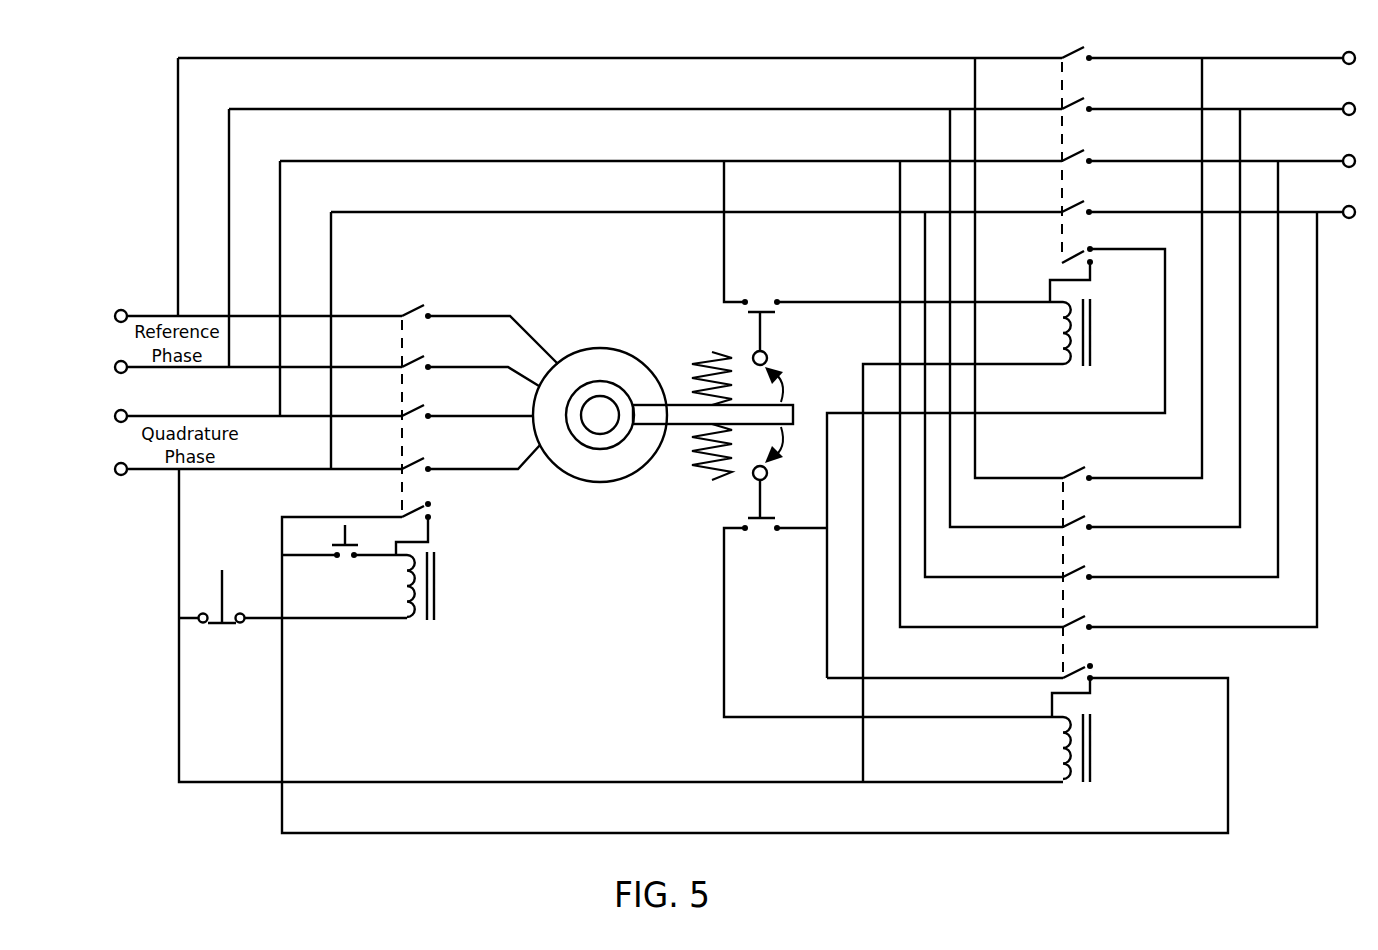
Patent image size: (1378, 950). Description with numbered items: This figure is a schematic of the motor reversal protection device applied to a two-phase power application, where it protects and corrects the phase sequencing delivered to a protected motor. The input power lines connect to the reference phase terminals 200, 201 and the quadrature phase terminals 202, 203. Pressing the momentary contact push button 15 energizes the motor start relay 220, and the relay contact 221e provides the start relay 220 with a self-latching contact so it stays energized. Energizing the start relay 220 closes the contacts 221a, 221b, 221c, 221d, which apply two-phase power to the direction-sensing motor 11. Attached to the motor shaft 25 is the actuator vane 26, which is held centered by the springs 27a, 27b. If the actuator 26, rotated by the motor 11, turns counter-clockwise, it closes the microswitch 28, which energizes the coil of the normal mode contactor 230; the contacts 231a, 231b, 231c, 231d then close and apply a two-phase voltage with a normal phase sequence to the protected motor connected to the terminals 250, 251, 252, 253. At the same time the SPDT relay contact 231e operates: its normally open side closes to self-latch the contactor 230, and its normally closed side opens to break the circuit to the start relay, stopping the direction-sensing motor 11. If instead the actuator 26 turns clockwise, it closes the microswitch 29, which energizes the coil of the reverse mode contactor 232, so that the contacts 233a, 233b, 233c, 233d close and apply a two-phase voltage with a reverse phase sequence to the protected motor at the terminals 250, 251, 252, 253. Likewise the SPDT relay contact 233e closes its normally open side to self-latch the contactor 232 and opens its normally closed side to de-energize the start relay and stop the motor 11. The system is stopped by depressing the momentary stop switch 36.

The reference phase terminal 200 is at (118, 310).
The reference phase terminal 201 is at (118, 361).
The quadrature phase terminal 202 is at (130, 413).
The quadrature phase terminal 203 is at (118, 463).
The two-phase direction-sensing motor 11 is at (590, 347).
The motor shaft 25 is at (598, 423).
The actuator vane 26 is at (678, 402).
The spring 27a is at (710, 352).
The spring 27b is at (702, 482).
The microswitch 28 is at (764, 338).
The microswitch 29 is at (764, 503).
The momentary contact push button 15 is at (341, 540).
The momentary stop switch 36 is at (244, 610).
The motor start relay 220 is at (438, 573).
The relay contact 221a is at (401, 312).
The relay contact 221b is at (427, 362).
The relay contact 221c is at (429, 411).
The relay contact 221d is at (429, 464).
The relay contact 221e is at (396, 514).
The normal mode contactor 230 is at (1078, 366).
The contact 231a is at (1060, 56).
The contact 231b is at (1060, 107).
The contact 231c is at (1060, 159).
The contact 231d is at (1060, 210).
The SPDT relay contact 231e is at (1060, 261).
The reverse mode contactor 232 is at (1078, 781).
The contact 233a is at (1061, 476).
The contact 233b is at (1061, 525).
The contact 233c is at (1061, 575).
The contact 233d is at (1061, 625).
The SPDT relay contact 233e is at (1061, 676).
The terminal 250 is at (1344, 53).
The terminal 251 is at (1344, 104).
The terminal 252 is at (1344, 156).
The terminal 253 is at (1344, 207).